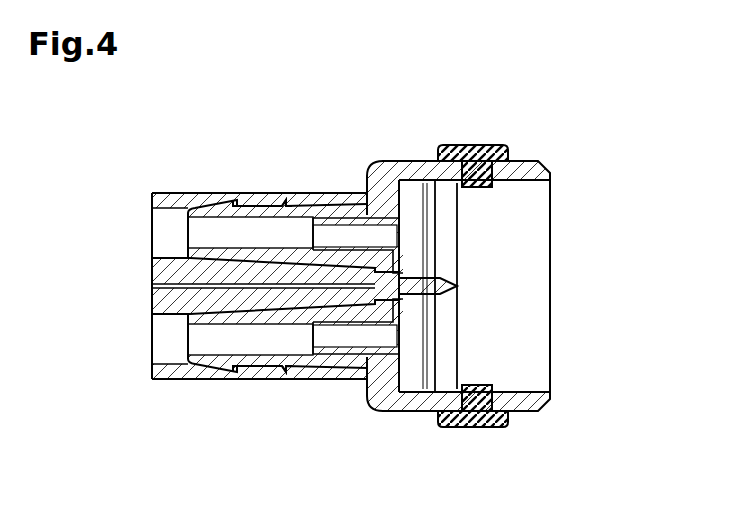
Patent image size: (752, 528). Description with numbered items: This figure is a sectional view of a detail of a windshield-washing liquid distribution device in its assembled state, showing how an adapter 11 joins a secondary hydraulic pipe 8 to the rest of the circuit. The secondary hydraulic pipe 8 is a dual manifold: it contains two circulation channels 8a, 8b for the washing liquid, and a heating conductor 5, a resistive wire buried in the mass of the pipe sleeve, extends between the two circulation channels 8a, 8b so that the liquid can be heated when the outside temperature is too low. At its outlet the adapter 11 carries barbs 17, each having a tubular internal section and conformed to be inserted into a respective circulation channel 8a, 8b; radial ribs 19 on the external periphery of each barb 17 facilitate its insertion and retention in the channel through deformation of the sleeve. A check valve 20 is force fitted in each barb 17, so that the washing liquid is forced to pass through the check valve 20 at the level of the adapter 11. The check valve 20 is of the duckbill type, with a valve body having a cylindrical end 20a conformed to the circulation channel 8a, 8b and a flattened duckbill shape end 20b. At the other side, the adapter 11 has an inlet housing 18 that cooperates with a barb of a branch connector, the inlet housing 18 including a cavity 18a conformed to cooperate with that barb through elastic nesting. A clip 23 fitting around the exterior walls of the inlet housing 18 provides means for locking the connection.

The heating conductor 5 is at (152, 285).
The secondary hydraulic pipe 8 is at (163, 193).
The circulation channel 8a is at (152, 227).
The circulation channel 8b is at (157, 337).
The adapter 11 is at (538, 158).
The barb 17 is at (258, 222).
The inlet housing 18 is at (540, 306).
The cavity 18a is at (433, 205).
The radial rib 19 is at (233, 199).
The check valve 20 is at (369, 235).
The cylindrical end 20a is at (421, 228).
The flattened duckbill shape end 20b is at (297, 230).
The clip 23 is at (478, 162).